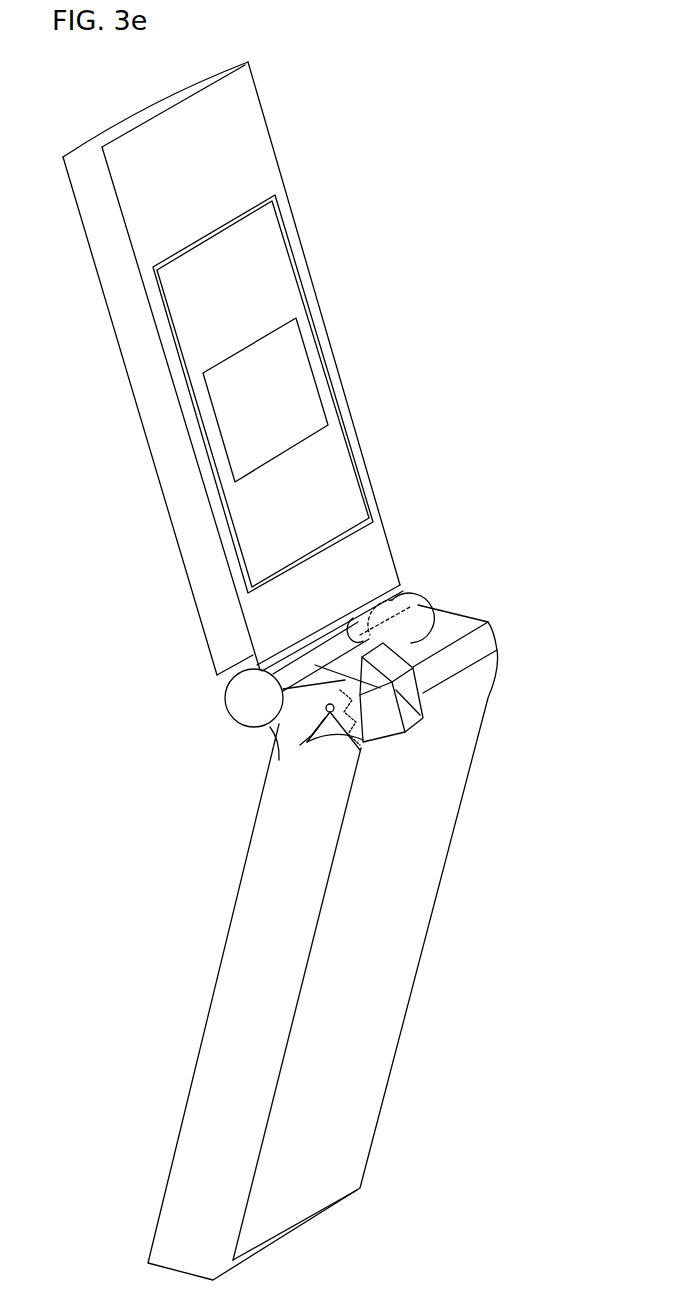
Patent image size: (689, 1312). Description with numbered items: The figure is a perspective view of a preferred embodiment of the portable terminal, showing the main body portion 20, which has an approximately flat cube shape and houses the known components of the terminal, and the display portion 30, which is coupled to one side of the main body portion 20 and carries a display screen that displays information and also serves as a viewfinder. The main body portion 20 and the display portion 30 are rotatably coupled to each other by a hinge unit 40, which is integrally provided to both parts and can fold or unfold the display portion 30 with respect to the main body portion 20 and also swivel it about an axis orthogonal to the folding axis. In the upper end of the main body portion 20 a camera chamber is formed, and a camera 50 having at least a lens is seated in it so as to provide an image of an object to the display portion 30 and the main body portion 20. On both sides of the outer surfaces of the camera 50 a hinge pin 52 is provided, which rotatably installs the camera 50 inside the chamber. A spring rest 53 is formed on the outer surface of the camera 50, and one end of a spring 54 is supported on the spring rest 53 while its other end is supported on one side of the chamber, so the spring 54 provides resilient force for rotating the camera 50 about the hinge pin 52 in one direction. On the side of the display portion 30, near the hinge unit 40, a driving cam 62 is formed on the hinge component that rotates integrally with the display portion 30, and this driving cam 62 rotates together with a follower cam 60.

The main body portion 20 is at (234, 993).
The display portion 30 is at (333, 347).
The hinge unit 40 is at (226, 697).
The camera 50 is at (408, 682).
The hinge pin 52 is at (377, 723).
The spring rest 53 is at (370, 725).
The spring 54 is at (335, 742).
The follower cam 60 is at (268, 730).
The driving cam 62 is at (253, 657).